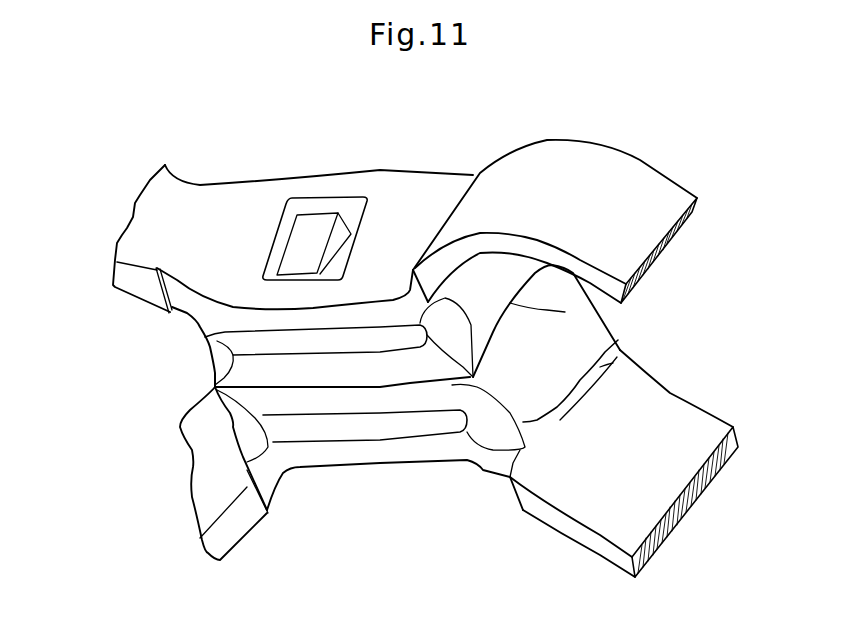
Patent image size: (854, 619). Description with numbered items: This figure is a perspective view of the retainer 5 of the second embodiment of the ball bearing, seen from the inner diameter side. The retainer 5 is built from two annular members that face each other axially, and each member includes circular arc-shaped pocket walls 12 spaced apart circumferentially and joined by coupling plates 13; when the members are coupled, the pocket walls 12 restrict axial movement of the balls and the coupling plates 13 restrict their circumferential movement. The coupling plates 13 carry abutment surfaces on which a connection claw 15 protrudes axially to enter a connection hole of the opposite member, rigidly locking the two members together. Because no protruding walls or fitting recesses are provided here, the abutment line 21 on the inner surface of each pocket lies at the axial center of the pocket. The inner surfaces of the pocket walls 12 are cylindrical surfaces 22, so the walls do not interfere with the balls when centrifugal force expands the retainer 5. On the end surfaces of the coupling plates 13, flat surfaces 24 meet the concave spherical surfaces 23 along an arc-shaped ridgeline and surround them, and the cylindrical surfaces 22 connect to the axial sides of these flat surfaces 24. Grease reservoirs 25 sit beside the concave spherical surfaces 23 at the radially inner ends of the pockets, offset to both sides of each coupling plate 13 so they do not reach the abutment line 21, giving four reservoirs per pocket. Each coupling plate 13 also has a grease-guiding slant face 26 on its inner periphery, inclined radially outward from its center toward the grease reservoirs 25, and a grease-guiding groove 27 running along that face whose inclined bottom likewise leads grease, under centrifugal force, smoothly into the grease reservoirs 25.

The retainer 5 is at (124, 233).
The pocket wall 12 is at (167, 187).
The coupling plate 13 is at (407, 183).
The connection claw 15 is at (317, 227).
The abutment line 21 is at (565, 312).
The cylindrical surface 22 is at (678, 428).
The concave spherical surface 23 is at (560, 357).
The flat surface 24 is at (600, 367).
The grease reservoir 25 is at (217, 342).
The grease-guiding slant face 26 is at (305, 457).
The grease-guiding groove 27 is at (340, 433).